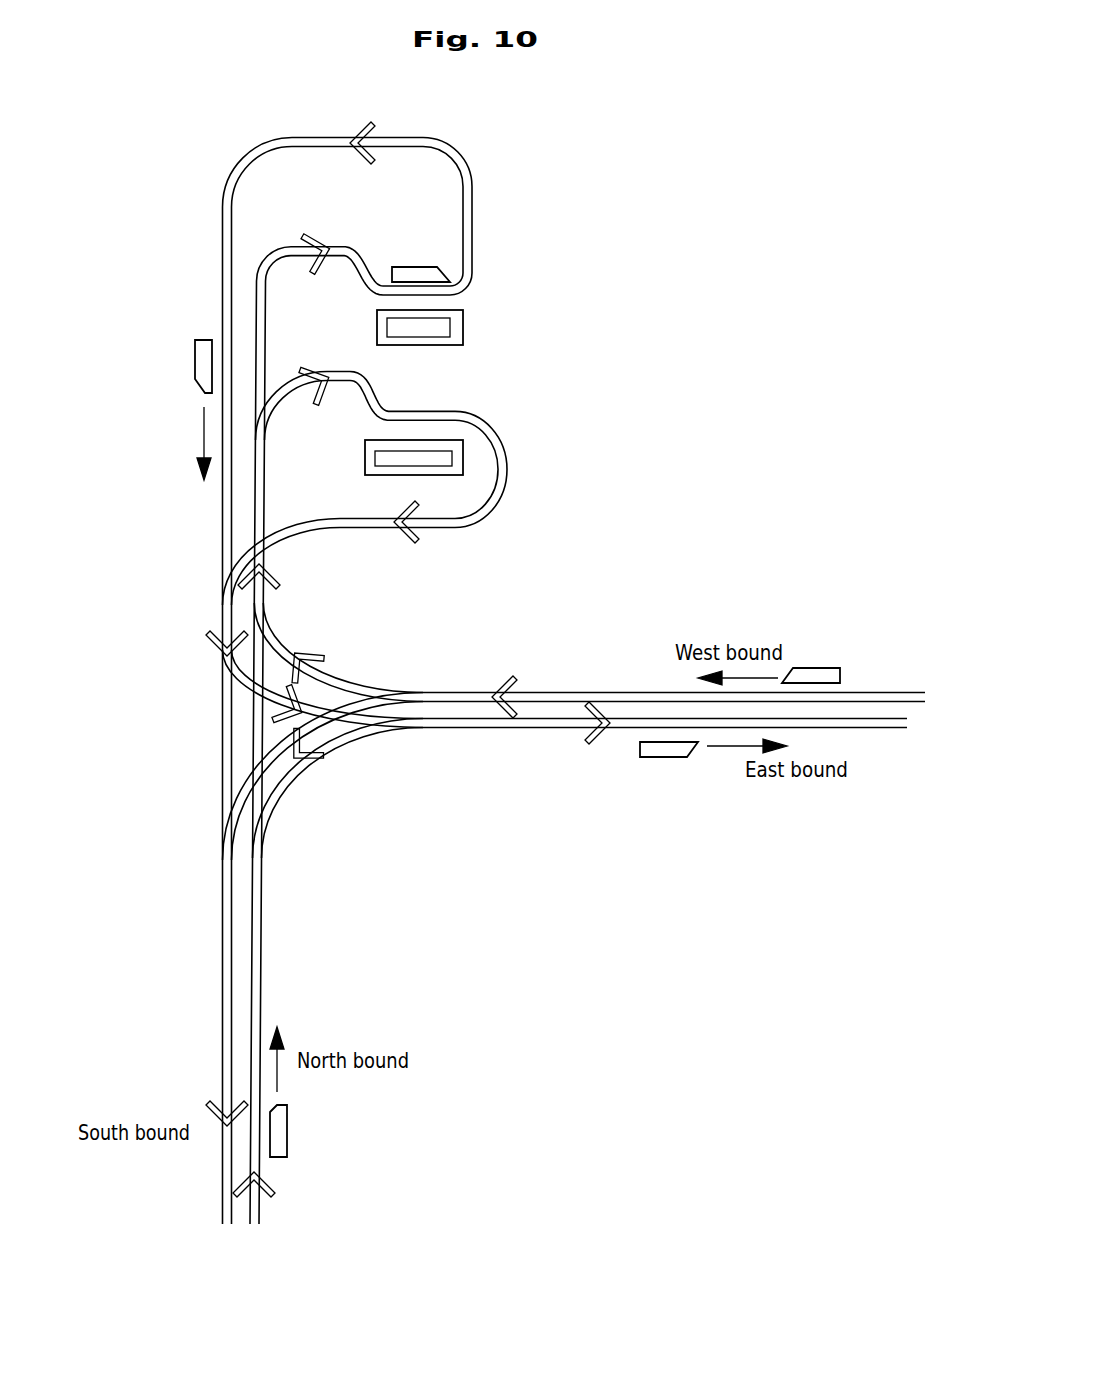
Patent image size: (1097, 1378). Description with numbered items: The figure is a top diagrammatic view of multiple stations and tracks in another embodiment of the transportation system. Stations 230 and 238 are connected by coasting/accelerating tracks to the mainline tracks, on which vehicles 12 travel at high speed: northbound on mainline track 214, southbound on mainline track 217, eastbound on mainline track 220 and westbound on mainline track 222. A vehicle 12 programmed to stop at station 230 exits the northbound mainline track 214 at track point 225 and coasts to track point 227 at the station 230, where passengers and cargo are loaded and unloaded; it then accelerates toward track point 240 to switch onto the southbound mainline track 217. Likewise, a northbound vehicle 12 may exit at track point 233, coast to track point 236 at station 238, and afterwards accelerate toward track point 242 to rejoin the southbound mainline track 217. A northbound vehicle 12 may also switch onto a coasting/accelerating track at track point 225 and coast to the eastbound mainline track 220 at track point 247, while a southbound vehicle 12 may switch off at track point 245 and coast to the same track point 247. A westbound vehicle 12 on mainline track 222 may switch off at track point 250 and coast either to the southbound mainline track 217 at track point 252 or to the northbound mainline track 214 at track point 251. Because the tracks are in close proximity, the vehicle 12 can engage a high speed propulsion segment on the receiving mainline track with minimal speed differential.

The vehicle 12 is at (195, 352).
The northbound mainline track 214 is at (262, 940).
The southbound mainline track 217 is at (222, 1172).
The eastbound mainline track 220 is at (526, 734).
The westbound mainline track 222 is at (571, 690).
The track point 225 is at (265, 422).
The track point 227 is at (435, 407).
The station 230 is at (370, 468).
The track point 233 is at (265, 275).
The track point 236 is at (476, 283).
The station 238 is at (463, 332).
The track point 240 is at (222, 587).
The track point 242 is at (223, 202).
The track point 245 is at (222, 658).
The track point 247 is at (443, 735).
The track point 250 is at (431, 692).
The track point 251 is at (262, 604).
The track point 252 is at (220, 857).